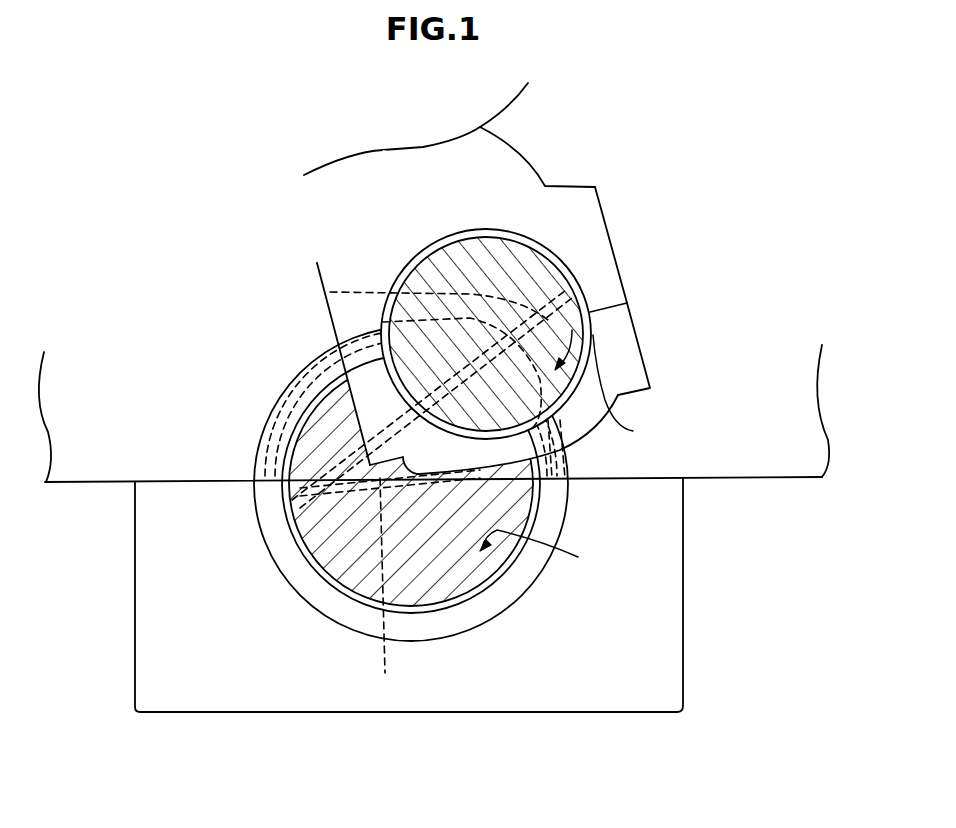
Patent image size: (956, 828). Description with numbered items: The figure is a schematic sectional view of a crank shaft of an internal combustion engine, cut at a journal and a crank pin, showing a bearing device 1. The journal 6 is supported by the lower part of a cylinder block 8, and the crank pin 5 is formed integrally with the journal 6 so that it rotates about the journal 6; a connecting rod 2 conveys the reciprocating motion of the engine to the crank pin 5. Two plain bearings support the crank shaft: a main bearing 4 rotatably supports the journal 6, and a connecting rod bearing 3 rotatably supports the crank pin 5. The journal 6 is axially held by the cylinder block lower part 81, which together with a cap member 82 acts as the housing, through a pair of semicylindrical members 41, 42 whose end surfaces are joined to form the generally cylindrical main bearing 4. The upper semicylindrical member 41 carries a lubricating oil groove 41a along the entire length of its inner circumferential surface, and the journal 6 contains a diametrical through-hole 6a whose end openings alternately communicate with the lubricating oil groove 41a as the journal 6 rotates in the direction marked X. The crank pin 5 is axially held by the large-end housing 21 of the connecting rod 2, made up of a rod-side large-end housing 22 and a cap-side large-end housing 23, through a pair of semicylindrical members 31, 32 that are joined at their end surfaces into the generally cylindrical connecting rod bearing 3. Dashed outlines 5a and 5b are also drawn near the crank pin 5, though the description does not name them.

The bearing device 1 is at (133, 208).
The connecting rod 2 is at (377, 180).
The connecting rod bearing 3 is at (590, 352).
The main bearing 4 is at (253, 503).
The crank pin 5 is at (507, 262).
The roller shaft 5a is at (290, 378).
The roller outline 5b is at (330, 292).
The journal 6 is at (335, 570).
The through-hole 6a is at (383, 589).
The cylinder block 8 is at (790, 507).
The large-end housing 21 is at (621, 208).
The rod-side large-end housing 22 is at (617, 257).
The cap-side large-end housing 23 is at (640, 337).
The semicylindrical member 31 is at (443, 243).
The semicylindrical member 32 is at (565, 403).
The semicylindrical member 41 is at (262, 421).
The lubricating oil groove 41a is at (255, 457).
The semicylindrical member 42 is at (268, 537).
The cylinder block lower part 81 is at (737, 465).
The cap member 82 is at (683, 642).